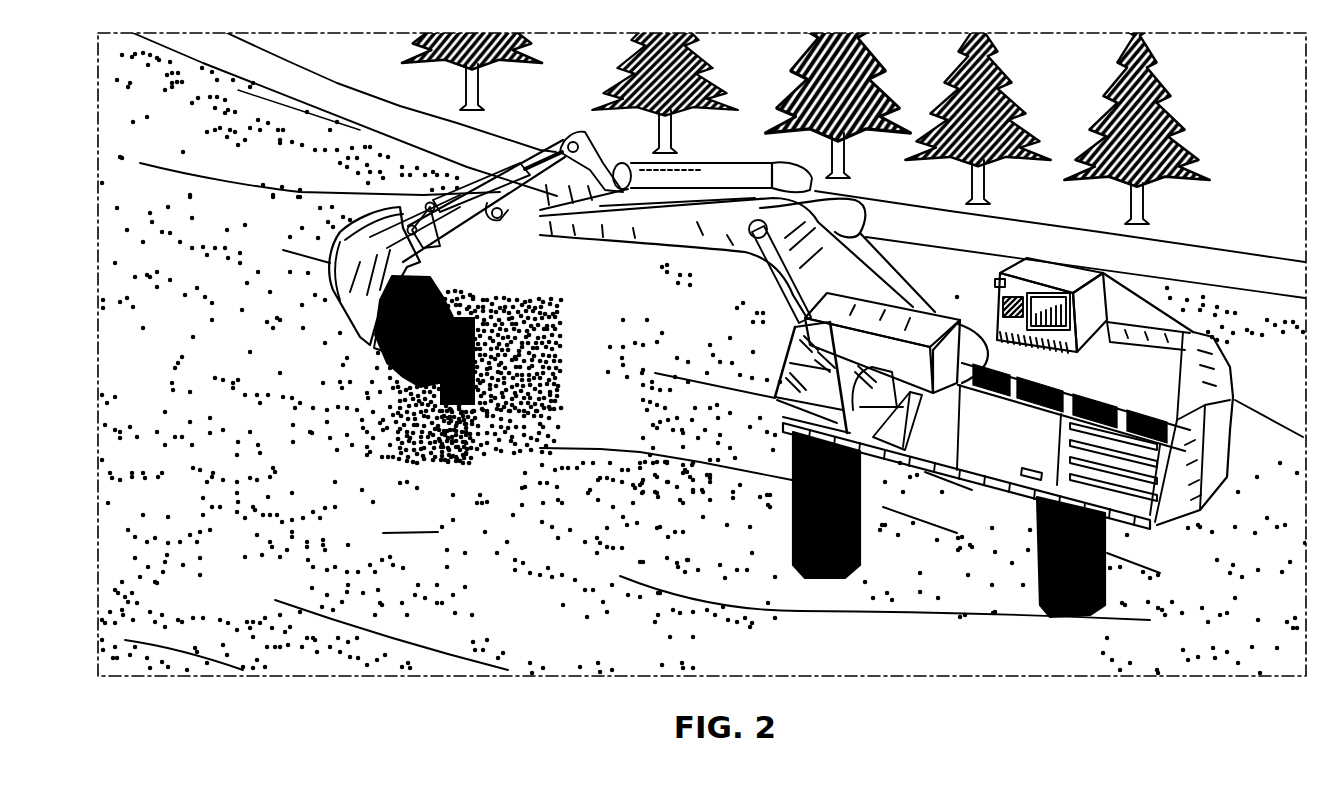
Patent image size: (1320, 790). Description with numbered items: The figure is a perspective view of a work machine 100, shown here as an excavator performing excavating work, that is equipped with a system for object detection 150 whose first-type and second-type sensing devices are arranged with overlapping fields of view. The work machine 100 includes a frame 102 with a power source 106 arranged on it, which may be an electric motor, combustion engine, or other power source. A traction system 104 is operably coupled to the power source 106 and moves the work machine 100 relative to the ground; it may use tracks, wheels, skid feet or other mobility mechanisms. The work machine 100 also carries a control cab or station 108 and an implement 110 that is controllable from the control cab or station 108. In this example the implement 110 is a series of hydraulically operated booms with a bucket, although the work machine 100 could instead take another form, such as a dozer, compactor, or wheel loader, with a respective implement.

The work machine 100 is at (1213, 368).
The frame 102 is at (1123, 498).
The traction system 104 is at (857, 543).
The power source 106 is at (1105, 372).
The control cab or station 108 is at (920, 322).
The implement 110 is at (680, 234).
The system for object detection 150 is at (1000, 285).